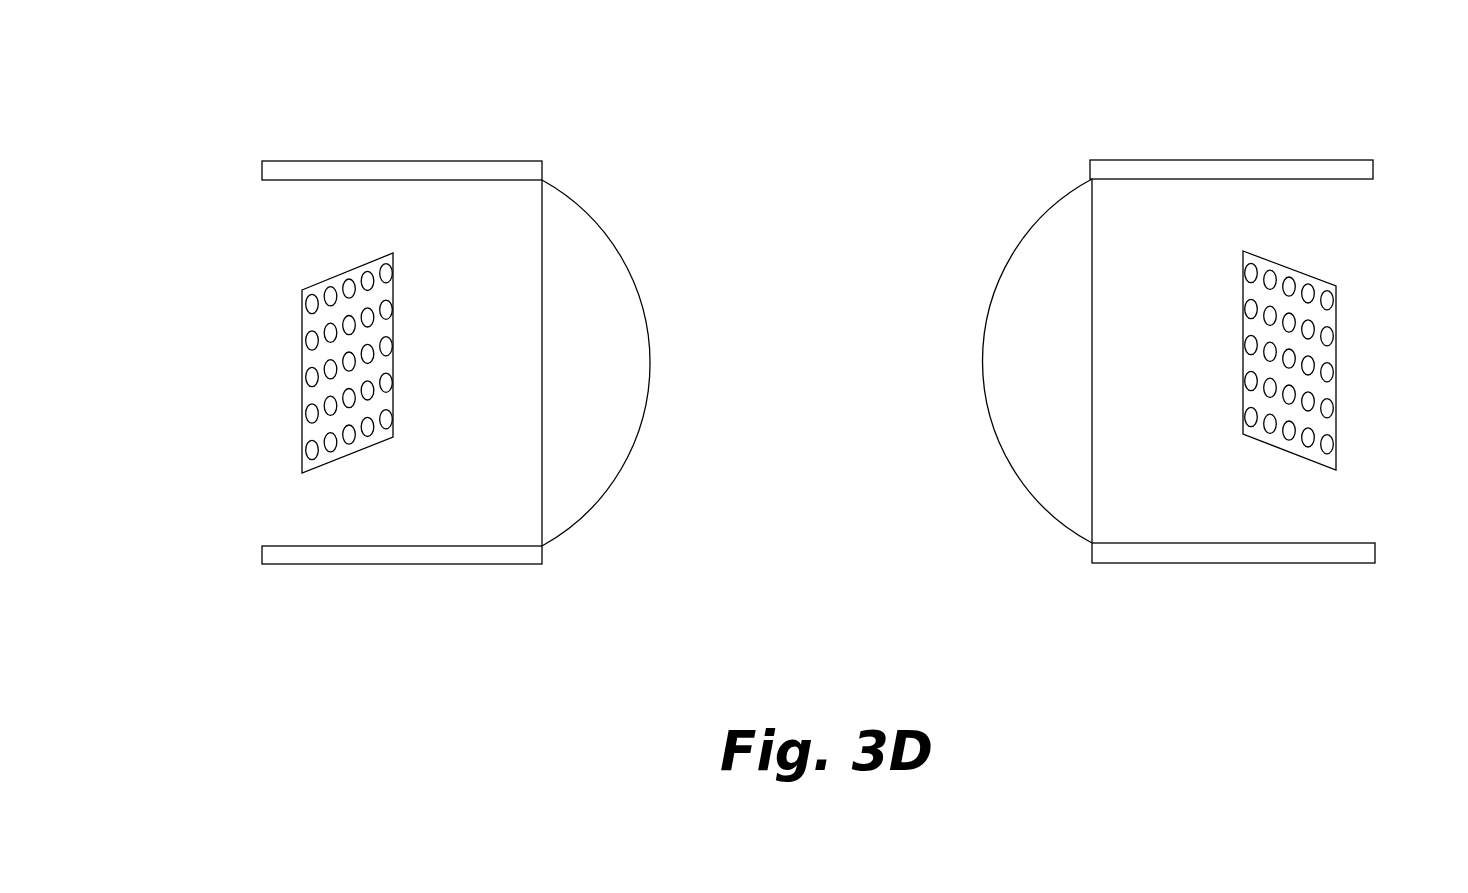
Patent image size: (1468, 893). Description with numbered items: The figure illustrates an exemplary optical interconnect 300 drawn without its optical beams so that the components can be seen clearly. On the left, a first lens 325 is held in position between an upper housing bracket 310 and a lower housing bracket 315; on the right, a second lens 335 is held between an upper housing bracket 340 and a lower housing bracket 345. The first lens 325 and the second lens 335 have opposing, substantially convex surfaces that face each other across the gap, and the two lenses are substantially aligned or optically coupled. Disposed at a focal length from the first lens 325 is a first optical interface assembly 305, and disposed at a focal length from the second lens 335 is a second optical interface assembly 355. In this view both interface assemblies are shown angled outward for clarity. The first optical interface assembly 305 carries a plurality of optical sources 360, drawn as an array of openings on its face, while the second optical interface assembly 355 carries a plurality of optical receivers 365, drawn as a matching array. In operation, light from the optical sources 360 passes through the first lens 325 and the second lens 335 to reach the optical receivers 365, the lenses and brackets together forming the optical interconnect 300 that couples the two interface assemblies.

The optical interconnect 300 is at (176, 82).
The first optical interface assembly 305 is at (336, 363).
The housing bracket 310 is at (343, 172).
The housing bracket 315 is at (373, 552).
The first lens 325 is at (553, 240).
The second lens 335 is at (1082, 213).
The housing bracket 340 is at (1205, 168).
The housing bracket 345 is at (1237, 548).
The second optical interface assembly 355 is at (1302, 362).
The optical sources 360 is at (389, 278).
The optical receivers 365 is at (1249, 275).